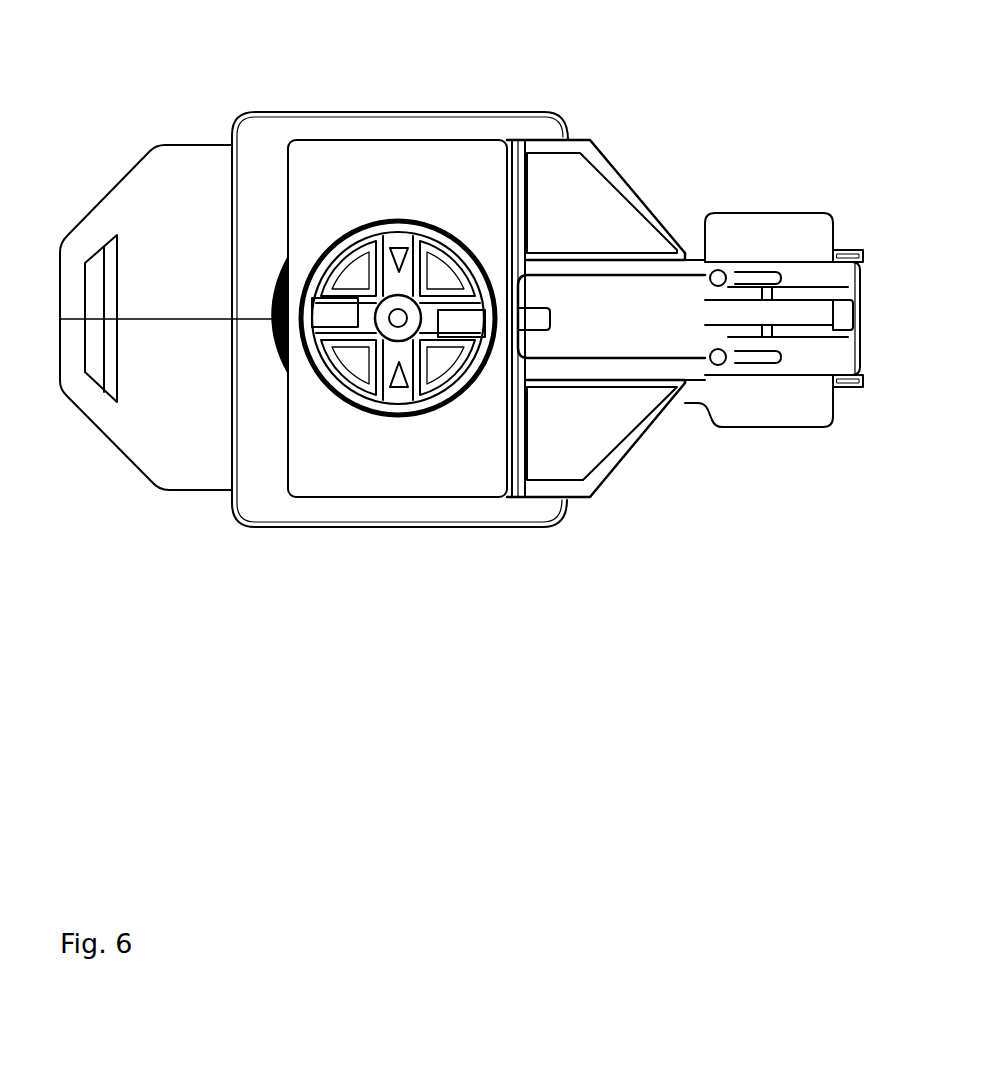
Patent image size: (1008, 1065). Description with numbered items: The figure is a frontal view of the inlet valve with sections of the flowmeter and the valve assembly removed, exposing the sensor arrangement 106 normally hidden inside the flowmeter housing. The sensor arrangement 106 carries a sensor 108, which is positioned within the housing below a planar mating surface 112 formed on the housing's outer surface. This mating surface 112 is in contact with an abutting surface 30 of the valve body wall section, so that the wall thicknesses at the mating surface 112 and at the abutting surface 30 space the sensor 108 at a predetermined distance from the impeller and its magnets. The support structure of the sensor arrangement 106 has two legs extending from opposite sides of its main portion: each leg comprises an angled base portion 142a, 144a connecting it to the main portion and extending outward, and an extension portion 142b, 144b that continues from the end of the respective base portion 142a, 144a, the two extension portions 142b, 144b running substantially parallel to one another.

The abutting surface 30 is at (282, 348).
The mating surface 112 is at (510, 330).
The sensor arrangement 106 is at (667, 290).
The sensor 108 is at (538, 320).
The base portion of first leg 142a is at (610, 477).
The extension portion of first leg 142b is at (543, 492).
The base portion of second leg 144a is at (625, 170).
The extension portion of second leg 144b is at (570, 137).